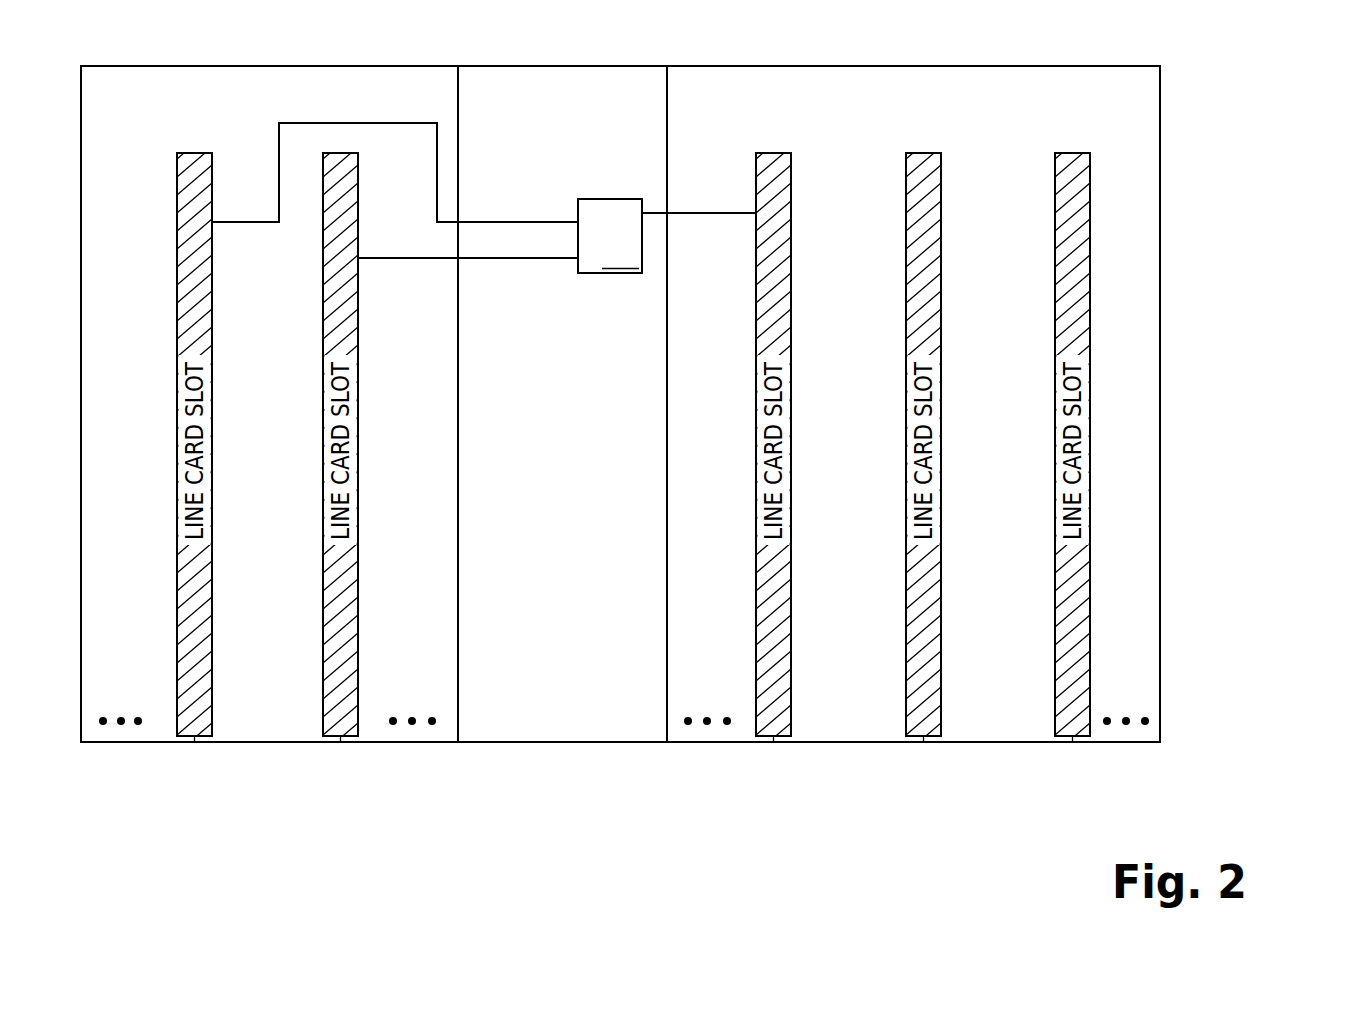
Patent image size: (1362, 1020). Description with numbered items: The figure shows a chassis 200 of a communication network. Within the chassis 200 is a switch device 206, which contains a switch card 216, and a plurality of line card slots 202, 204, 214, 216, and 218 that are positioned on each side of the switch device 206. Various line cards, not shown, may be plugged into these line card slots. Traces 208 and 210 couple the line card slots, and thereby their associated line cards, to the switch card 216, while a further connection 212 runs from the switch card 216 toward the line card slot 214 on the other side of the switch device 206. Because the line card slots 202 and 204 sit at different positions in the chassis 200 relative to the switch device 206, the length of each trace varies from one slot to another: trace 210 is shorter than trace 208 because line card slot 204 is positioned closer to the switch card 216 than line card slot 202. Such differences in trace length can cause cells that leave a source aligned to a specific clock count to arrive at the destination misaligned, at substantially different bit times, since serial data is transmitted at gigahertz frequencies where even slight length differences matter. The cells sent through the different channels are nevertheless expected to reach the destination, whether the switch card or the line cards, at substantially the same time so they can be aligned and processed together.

The chassis 200 is at (1217, 683).
The line card slot 202 is at (212, 710).
The line card slot 204 is at (356, 692).
The switch device 206 is at (562, 404).
The trace 208 is at (392, 123).
The trace 210 is at (395, 258).
The connection 212 is at (699, 200).
The line card slot 214 is at (790, 692).
The switch card 216 is at (940, 692).
The line card slot 218 is at (1089, 692).